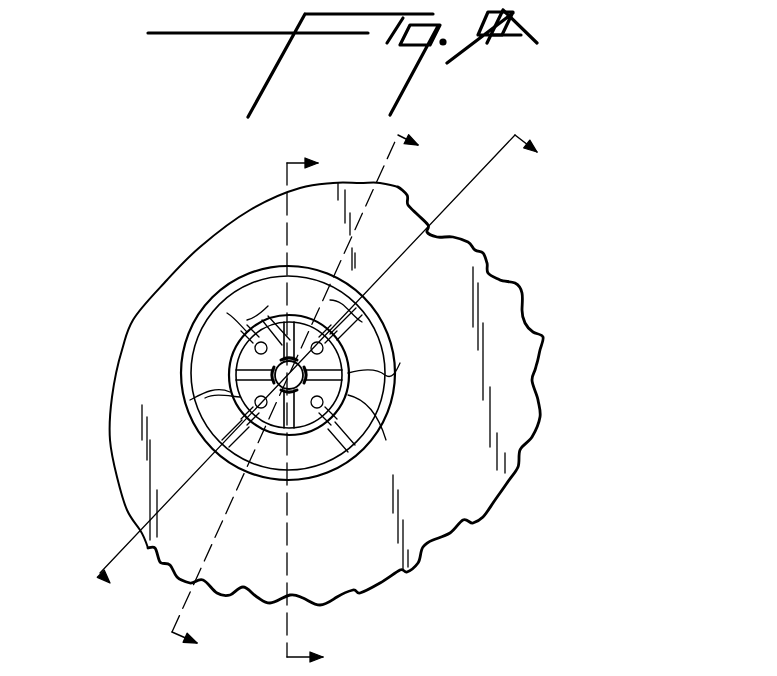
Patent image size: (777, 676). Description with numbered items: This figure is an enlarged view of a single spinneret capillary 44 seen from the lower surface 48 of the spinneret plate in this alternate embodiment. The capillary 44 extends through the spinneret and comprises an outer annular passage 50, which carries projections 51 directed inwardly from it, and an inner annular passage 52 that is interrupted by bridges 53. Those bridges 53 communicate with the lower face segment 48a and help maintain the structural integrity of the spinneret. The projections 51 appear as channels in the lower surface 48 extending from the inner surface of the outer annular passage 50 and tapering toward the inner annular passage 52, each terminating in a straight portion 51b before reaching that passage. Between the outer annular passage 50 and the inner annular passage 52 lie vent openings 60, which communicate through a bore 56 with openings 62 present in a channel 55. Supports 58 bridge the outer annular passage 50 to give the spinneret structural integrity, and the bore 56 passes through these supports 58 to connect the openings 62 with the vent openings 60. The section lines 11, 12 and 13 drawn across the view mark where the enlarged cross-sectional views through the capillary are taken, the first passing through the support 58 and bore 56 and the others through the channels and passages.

The section line 11— 11 is at (338, 373).
The section line 12— 12 is at (325, 412).
The section line 13— 13 is at (316, 398).
The capillary 44 is at (170, 363).
The lower surface 48 is at (143, 390).
The lower face segment 48a is at (205, 398).
The outer annular passage 50 is at (350, 283).
The projections 51 is at (330, 460).
The straight portion 51b is at (340, 440).
The inner annular passage 52 is at (367, 315).
The bridges 53 is at (281, 436).
The channel 55 is at (185, 325).
The bore 56 is at (247, 320).
The supports 58 is at (260, 317).
The vent openings 60 is at (400, 363).
The openings 62 is at (227, 313).